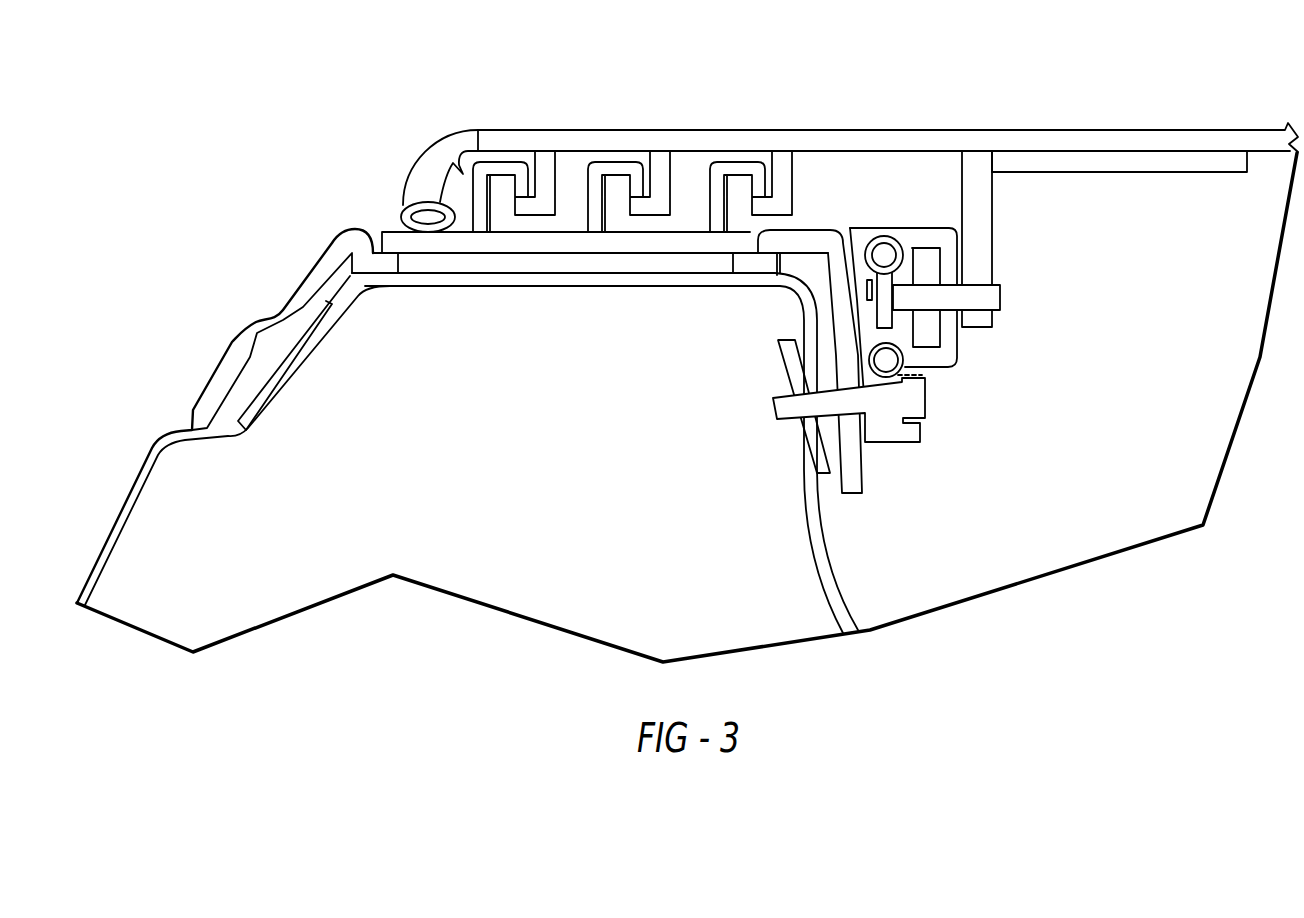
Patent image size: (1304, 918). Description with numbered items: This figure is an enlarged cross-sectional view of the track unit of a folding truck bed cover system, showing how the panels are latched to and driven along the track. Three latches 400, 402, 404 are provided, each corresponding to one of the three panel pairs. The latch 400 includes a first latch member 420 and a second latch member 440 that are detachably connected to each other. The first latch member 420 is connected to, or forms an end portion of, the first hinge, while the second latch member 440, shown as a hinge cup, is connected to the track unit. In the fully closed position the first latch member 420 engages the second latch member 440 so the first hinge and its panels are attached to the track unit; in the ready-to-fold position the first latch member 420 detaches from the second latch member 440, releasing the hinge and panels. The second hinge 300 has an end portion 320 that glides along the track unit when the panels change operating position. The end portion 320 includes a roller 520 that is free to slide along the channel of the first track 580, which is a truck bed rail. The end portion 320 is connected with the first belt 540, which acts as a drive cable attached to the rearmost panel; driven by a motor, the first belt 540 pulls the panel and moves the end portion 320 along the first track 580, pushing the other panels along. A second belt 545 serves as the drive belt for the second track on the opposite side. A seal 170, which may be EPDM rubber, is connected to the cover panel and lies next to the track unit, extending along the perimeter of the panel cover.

The seal 170 is at (396, 212).
The second hinge 300 is at (1170, 174).
The end portion 320 is at (997, 322).
The latch 400 is at (584, 192).
The latch 402 is at (506, 162).
The latch 404 is at (739, 162).
The first latch member 420 is at (612, 227).
The second latch member 440 is at (591, 207).
The roller 520 is at (933, 264).
The first belt 540 is at (894, 240).
The second belt 545 is at (906, 363).
The first track 580 is at (935, 225).